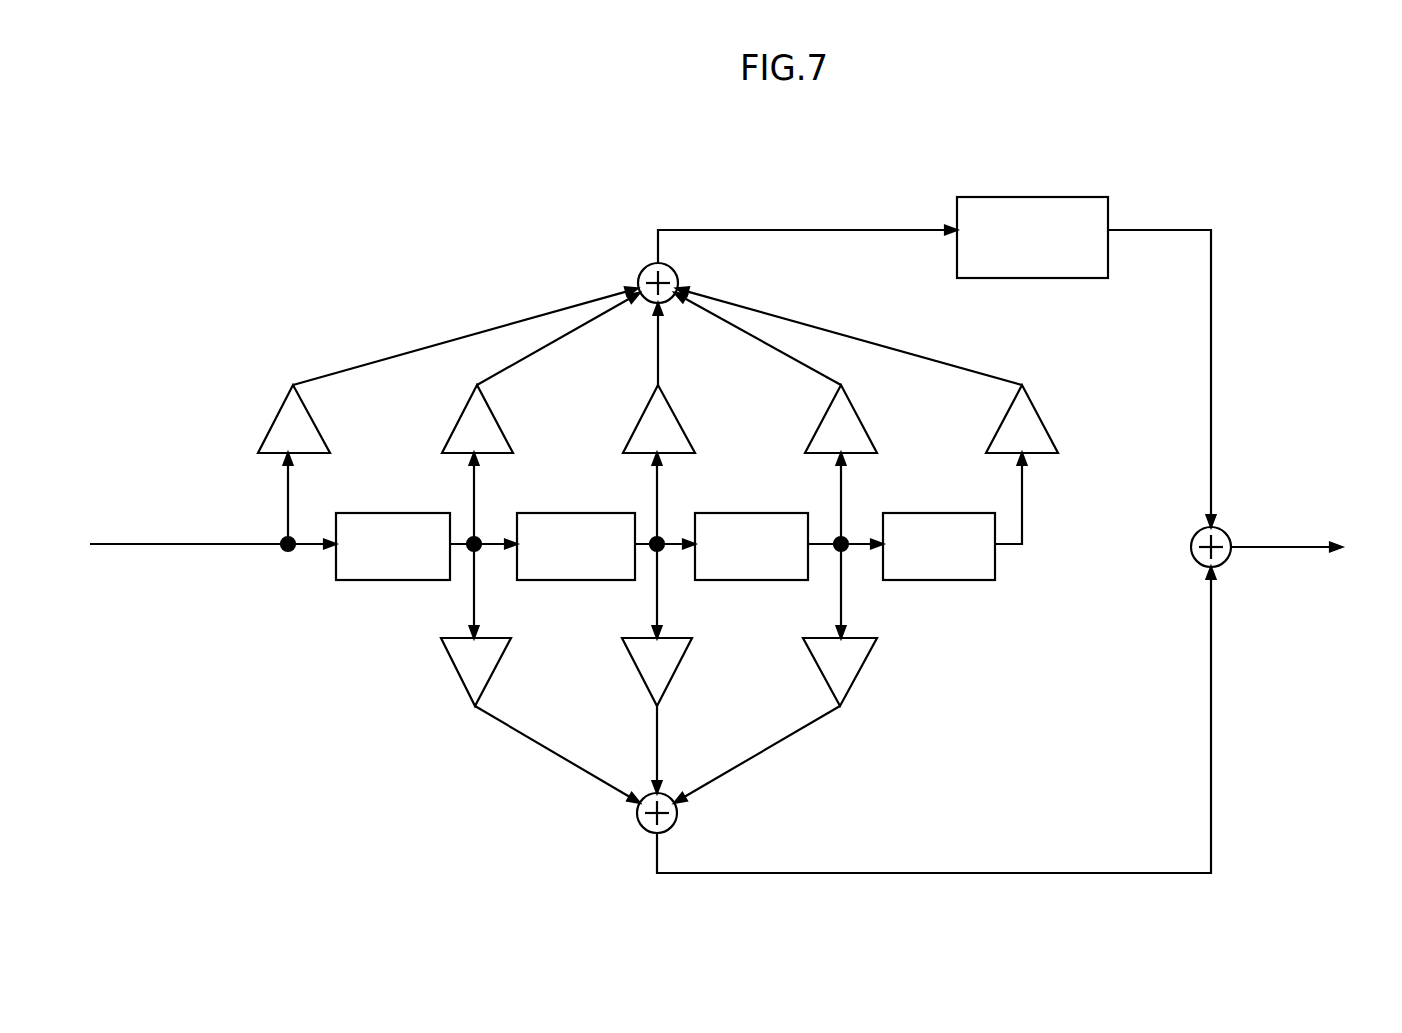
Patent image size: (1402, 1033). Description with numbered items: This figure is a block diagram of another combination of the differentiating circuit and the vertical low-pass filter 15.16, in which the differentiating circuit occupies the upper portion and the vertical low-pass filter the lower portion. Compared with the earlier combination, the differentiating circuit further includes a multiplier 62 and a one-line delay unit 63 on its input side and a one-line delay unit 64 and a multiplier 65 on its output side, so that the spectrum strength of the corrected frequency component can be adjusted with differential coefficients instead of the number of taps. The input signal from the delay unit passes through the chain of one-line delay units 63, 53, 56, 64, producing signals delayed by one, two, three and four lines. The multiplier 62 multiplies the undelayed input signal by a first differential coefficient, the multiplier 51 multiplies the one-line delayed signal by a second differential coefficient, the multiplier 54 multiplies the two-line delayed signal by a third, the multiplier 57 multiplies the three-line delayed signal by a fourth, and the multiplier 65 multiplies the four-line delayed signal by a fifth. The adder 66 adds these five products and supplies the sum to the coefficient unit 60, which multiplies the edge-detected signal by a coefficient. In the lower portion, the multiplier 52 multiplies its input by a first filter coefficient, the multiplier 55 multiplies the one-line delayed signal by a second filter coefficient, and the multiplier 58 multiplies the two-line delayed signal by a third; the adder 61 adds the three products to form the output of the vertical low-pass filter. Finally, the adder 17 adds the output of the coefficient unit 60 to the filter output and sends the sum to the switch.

The differentiating circuit and vertical low-pass filter 15.16 is at (622, 175).
The adder 17 is at (1191, 547).
The multiplier 51 is at (498, 435).
The multiplier 52 is at (489, 673).
The 1H delay unit 53 is at (558, 523).
The multiplier 54 is at (680, 435).
The multiplier 55 is at (671, 673).
The 1H delay unit 56 is at (753, 523).
The multiplier 57 is at (862, 435).
The multiplier 58 is at (855, 675).
The coefficient unit 60 is at (1010, 198).
The adder 61 is at (674, 822).
The multiplier 62 is at (314, 435).
The 1H delay unit 63 is at (379, 523).
The 1H delay unit 64 is at (923, 523).
The multiplier 65 is at (1040, 435).
The adder 66 is at (638, 268).